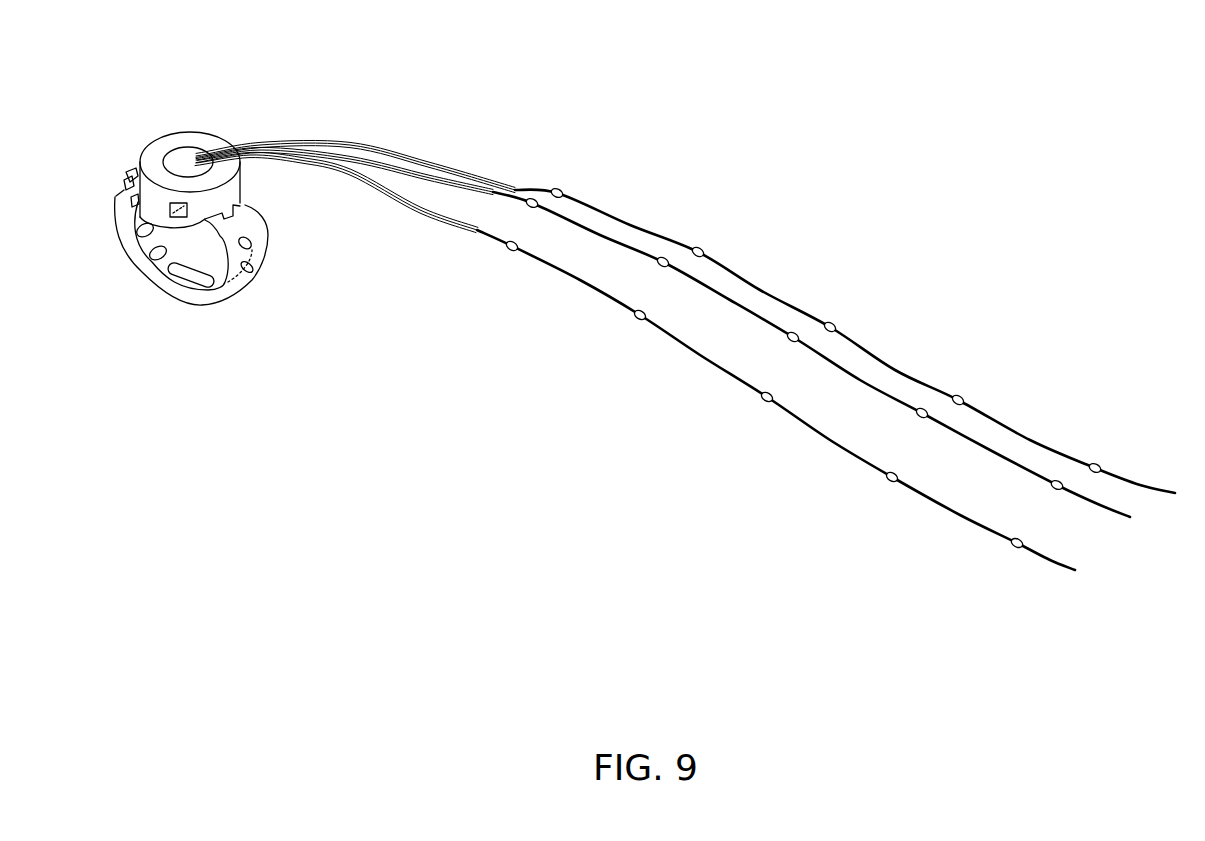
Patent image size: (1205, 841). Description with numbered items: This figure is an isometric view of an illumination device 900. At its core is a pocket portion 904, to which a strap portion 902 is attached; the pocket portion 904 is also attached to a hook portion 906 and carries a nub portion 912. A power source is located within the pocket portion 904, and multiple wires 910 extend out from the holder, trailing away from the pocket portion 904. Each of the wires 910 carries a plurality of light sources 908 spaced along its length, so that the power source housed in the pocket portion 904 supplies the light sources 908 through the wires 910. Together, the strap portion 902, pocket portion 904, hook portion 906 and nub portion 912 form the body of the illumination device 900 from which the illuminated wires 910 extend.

The illumination device 900 is at (492, 103).
The strap portion 902 is at (200, 306).
The pocket portion 904 is at (173, 132).
The hook portion 906 is at (133, 168).
The light sources 908 is at (763, 395).
The wires 910 is at (317, 148).
The nub portion 912 is at (188, 202).